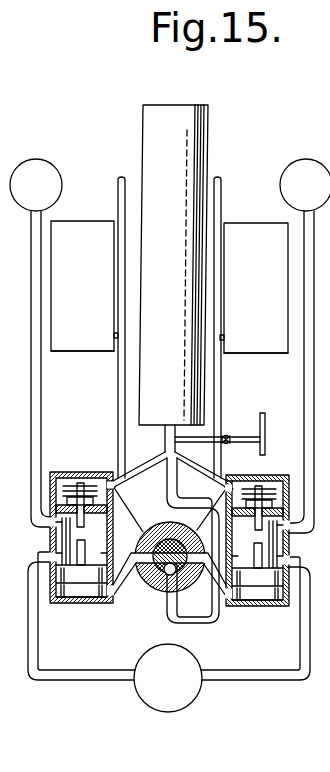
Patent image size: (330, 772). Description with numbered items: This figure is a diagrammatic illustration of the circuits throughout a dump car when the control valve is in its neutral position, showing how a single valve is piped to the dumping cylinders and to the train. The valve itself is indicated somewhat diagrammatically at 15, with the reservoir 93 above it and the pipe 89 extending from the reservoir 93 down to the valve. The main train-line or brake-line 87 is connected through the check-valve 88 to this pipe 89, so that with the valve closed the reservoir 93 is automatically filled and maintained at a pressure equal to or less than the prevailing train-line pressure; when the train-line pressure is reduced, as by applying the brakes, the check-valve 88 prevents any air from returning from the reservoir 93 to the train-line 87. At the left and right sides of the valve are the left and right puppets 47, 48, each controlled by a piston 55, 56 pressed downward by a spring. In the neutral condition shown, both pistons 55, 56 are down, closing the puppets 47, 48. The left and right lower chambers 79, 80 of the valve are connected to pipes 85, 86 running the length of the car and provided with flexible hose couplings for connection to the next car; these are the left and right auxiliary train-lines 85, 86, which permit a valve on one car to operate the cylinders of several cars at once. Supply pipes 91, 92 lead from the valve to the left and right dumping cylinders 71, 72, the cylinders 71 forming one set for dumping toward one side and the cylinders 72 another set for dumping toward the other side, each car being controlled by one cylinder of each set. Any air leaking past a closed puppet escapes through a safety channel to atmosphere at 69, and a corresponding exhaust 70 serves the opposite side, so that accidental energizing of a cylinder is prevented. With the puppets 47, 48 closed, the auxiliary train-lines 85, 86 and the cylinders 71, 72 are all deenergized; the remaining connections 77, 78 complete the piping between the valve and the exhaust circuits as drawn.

The rotary throttle valve 15 is at (167, 506).
The left puppet 47 is at (81, 485).
The right puppet 48 is at (257, 488).
The left piston 55 is at (83, 337).
The right piston 56 is at (255, 345).
The atmosphere 69 is at (35, 643).
The right atmospheric conduit 70 is at (303, 642).
The left dumping cylinder 71 is at (36, 185).
The right dumping cylinder 72 is at (305, 185).
The cross conduit 77 is at (169, 582).
The loop conduit 78 is at (216, 589).
The left lower chamber 79 is at (81, 591).
The right lower chamber 80 is at (257, 595).
The left auxiliary train-line 85 is at (114, 272).
The right auxiliary train-line 86 is at (218, 272).
The main train-line 87 is at (265, 419).
The check-valve 88 is at (224, 433).
The reservoir pipe 89 is at (166, 442).
The left supply pipe 91 is at (35, 395).
The right supply pipe 92 is at (303, 370).
The reservoir 93 is at (173, 265).